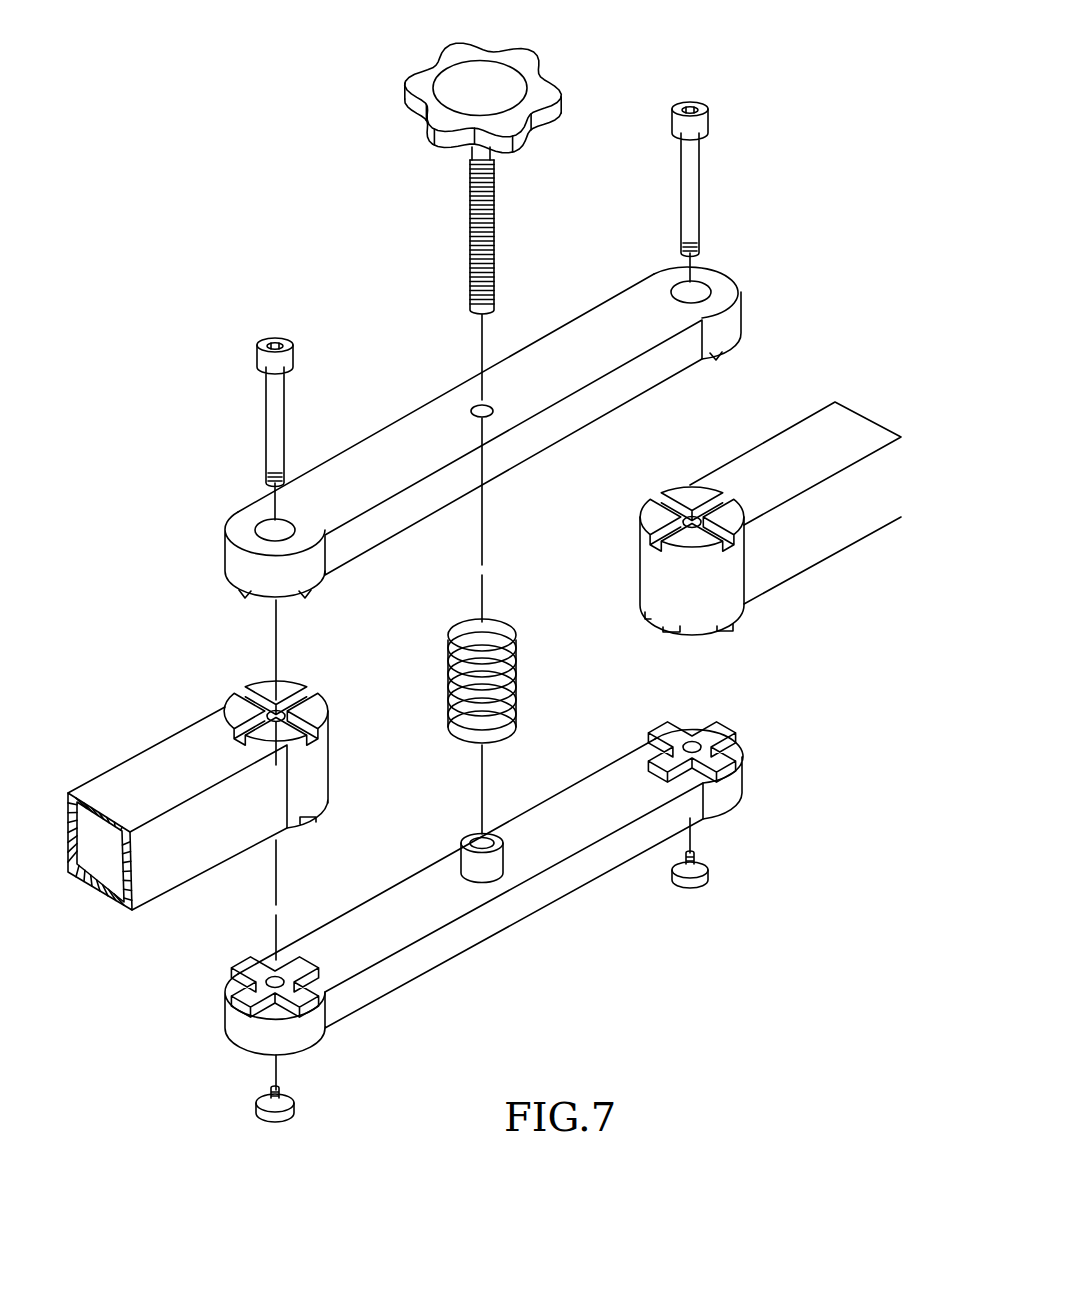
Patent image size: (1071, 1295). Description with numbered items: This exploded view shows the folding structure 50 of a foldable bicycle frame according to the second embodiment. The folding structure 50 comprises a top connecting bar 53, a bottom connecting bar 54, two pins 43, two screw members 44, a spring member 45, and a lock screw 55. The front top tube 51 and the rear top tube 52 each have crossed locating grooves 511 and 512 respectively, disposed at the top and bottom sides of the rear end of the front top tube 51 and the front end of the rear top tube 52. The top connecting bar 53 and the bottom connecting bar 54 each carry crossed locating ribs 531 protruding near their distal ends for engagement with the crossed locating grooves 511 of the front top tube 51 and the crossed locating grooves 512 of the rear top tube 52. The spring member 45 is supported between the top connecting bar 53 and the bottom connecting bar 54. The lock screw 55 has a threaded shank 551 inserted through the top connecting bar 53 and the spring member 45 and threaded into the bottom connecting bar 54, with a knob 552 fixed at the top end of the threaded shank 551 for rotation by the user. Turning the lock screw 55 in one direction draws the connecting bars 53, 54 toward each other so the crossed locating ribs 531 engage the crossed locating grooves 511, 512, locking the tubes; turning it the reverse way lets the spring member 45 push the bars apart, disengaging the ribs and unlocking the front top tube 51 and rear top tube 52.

The folding structure 50 is at (310, 245).
The lock screw 55 is at (622, 35).
The knob 552 is at (541, 87).
The threaded shank 551 is at (497, 233).
The pin 43 is at (697, 195).
The top connecting bar 53 is at (397, 437).
The crossed locating rib 531 is at (725, 352).
The rear top tube 52 is at (832, 418).
The crossed locating groove 512 is at (667, 500).
The front top tube 51 is at (147, 757).
The crossed locating groove 511 is at (250, 693).
The spring member 45 is at (453, 638).
The bottom connecting bar 54 is at (440, 915).
The screw member 44 is at (708, 882).